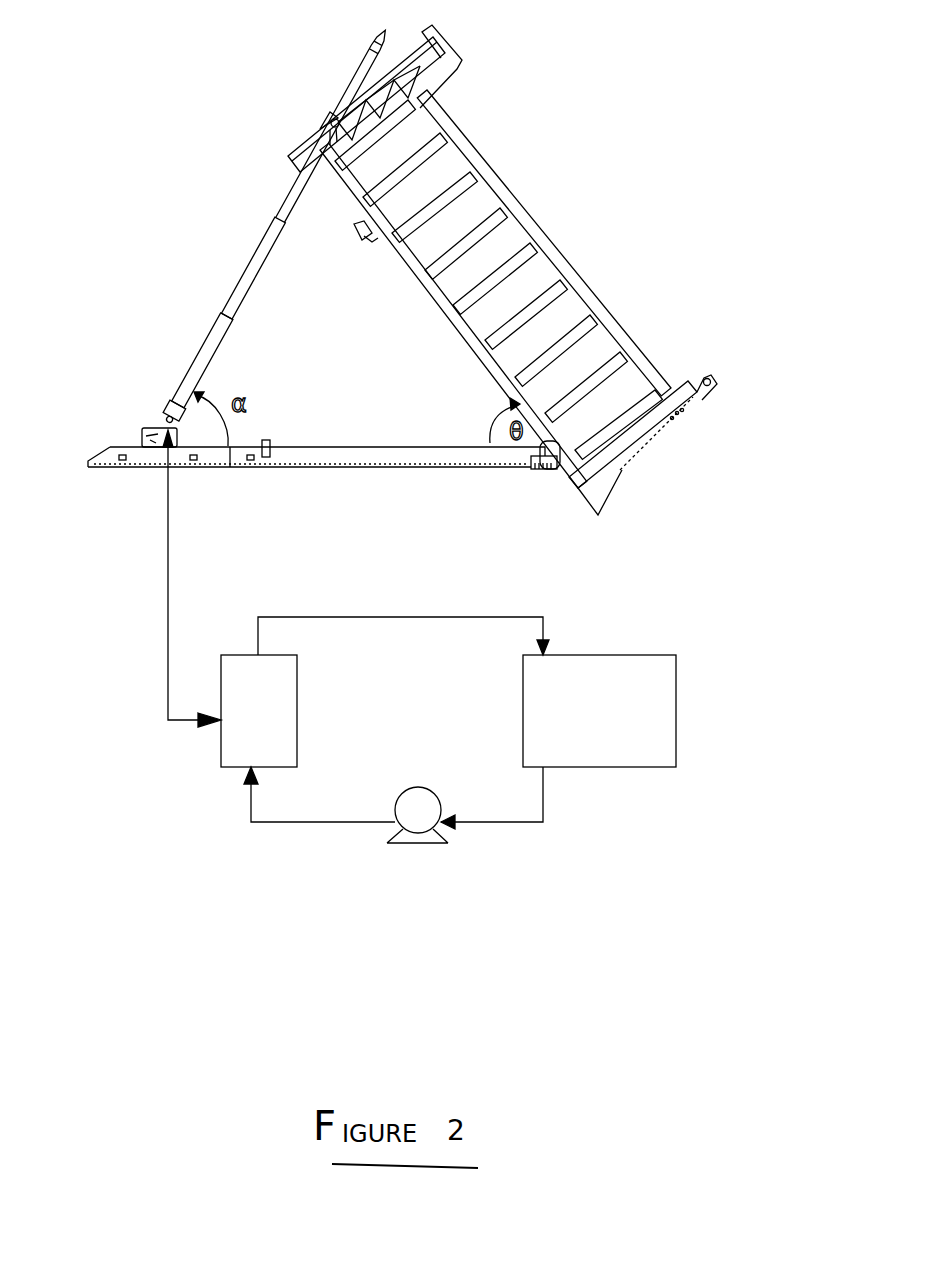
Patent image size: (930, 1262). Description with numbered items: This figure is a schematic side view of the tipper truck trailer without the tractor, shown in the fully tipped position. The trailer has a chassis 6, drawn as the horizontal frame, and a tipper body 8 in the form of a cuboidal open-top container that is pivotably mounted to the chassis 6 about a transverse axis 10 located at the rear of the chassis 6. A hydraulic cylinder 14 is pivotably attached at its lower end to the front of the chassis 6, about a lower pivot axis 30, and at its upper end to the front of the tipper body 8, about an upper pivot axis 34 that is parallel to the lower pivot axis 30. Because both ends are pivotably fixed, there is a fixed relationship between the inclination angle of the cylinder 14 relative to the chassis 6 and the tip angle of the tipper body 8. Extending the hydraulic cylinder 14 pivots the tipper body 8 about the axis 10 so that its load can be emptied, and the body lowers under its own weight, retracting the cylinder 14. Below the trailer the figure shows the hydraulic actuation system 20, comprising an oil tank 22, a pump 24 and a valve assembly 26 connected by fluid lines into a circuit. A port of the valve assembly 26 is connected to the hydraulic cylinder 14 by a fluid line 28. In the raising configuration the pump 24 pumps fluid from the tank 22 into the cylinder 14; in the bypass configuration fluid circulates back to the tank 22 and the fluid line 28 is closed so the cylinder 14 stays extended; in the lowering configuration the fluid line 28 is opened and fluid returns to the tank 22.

The trailer chassis 6 is at (350, 450).
The tipper body 8 is at (547, 226).
The transverse axis 10 is at (560, 455).
The hydraulic cylinder 14 is at (250, 245).
The hydraulic actuation system 20 is at (517, 882).
The oil tank 22 is at (677, 720).
The pump 24 is at (413, 843).
The valve assembly 26 is at (222, 768).
The fluid line 28 is at (168, 607).
The lower pivot axis 30 is at (158, 442).
The upper pivot axis 34 is at (333, 120).